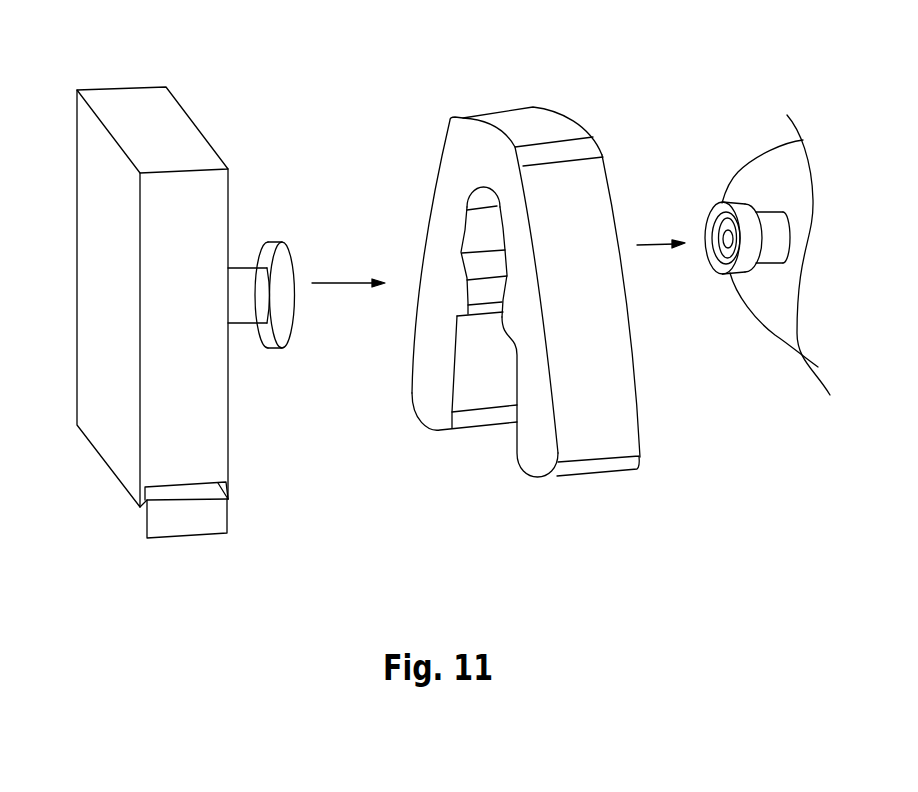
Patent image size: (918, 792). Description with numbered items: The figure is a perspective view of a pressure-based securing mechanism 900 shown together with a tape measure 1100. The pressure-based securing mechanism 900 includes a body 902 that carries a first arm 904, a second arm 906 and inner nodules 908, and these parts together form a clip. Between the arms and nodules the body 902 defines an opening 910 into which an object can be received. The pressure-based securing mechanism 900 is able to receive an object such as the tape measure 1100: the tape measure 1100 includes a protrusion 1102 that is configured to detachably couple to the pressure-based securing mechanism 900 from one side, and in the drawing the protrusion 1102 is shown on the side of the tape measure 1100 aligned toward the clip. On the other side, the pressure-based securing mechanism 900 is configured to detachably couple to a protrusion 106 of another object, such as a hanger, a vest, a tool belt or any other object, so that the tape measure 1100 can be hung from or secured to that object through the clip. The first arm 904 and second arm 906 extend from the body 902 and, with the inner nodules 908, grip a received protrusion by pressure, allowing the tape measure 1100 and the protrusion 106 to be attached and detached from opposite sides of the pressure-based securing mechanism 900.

The tape measure 1100 is at (130, 98).
The protrusion 1102 is at (270, 240).
The pressure-based securing mechanism 900 is at (487, 290).
The body 902 is at (553, 118).
The first arm 904 is at (421, 419).
The second arm 906 is at (532, 477).
The inner nodules 908 is at (507, 320).
The opening 910 is at (455, 231).
The protrusion 106 is at (720, 202).